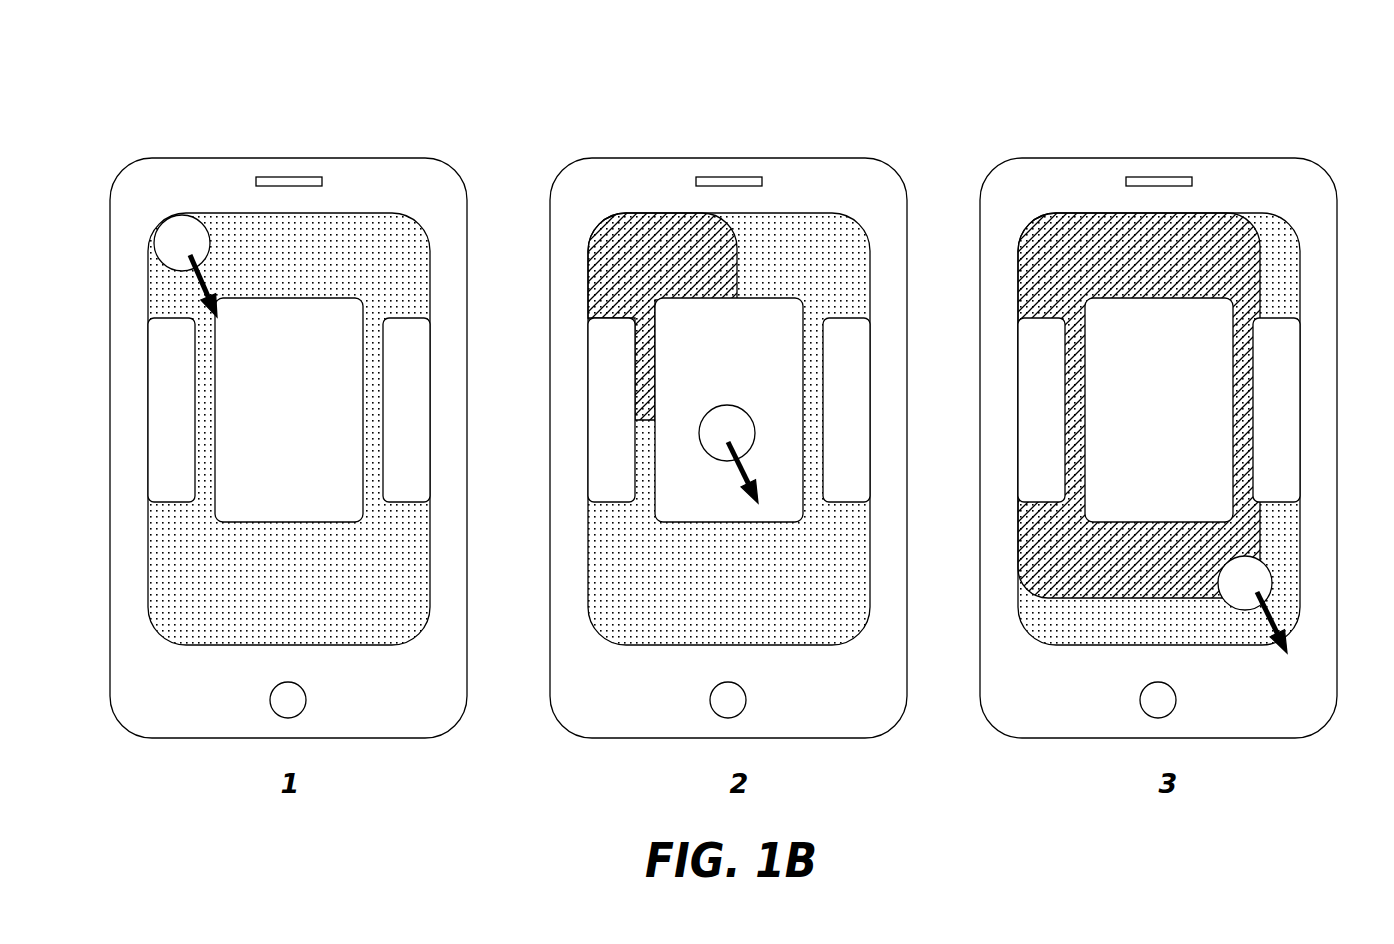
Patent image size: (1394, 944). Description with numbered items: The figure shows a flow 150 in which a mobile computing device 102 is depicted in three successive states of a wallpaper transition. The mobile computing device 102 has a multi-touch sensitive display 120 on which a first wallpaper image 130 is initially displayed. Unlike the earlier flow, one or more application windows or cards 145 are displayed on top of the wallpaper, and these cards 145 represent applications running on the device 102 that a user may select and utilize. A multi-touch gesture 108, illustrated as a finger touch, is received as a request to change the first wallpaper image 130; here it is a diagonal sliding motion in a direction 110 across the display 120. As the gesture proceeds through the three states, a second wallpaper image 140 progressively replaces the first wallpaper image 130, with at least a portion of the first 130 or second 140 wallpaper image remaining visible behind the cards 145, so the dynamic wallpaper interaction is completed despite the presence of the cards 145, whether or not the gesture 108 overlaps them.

The flow 150 is at (688, 59).
The mobile computing device 102 is at (365, 157).
The multi-touch gesture 108 is at (185, 245).
The direction 110 is at (214, 302).
The multi-touch sensitive display 120 is at (353, 645).
The first wallpaper image 130 is at (211, 620).
The second wallpaper image 140 is at (658, 287).
The application windows or cards 145 is at (167, 475).